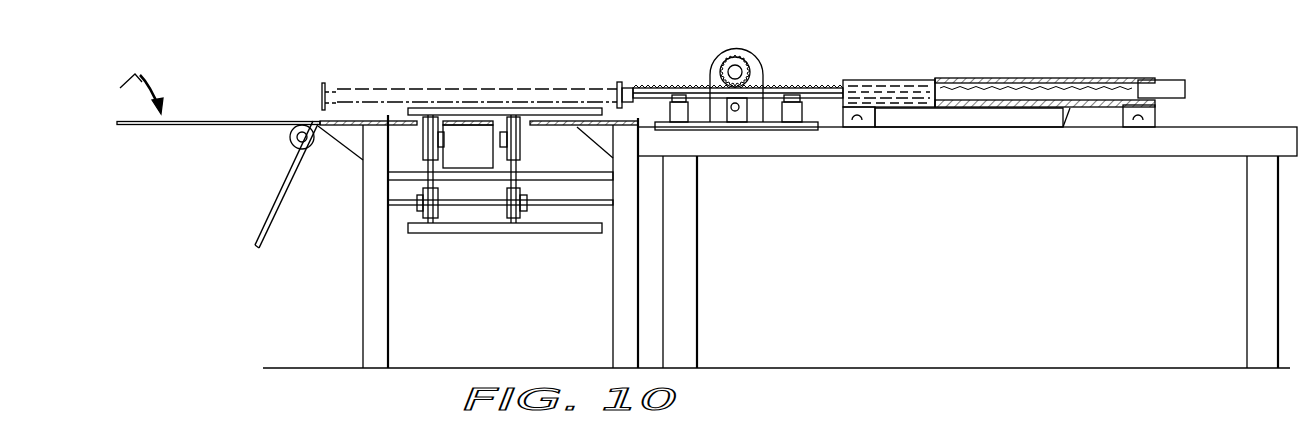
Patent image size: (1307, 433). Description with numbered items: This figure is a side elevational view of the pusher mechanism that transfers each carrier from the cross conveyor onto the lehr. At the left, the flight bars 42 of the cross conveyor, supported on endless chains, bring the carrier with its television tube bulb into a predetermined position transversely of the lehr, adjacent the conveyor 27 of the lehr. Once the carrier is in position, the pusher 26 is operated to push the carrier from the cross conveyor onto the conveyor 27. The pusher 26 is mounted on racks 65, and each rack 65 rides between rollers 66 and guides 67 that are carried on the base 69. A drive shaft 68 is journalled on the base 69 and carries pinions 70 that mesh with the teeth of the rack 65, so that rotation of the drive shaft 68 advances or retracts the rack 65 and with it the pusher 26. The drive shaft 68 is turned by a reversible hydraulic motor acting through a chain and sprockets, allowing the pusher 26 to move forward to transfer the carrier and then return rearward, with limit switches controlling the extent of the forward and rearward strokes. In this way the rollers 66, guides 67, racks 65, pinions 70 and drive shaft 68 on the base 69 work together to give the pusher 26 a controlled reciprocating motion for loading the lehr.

The pusher 26 is at (617, 88).
The conveyor 27 is at (254, 100).
The flight bars 42 is at (477, 110).
The racks 65 is at (820, 85).
The rollers 66 is at (679, 100).
The guides 67 is at (1003, 50).
The drive shaft 68 is at (757, 64).
The base 69 is at (1060, 127).
The pinions 70 is at (736, 70).